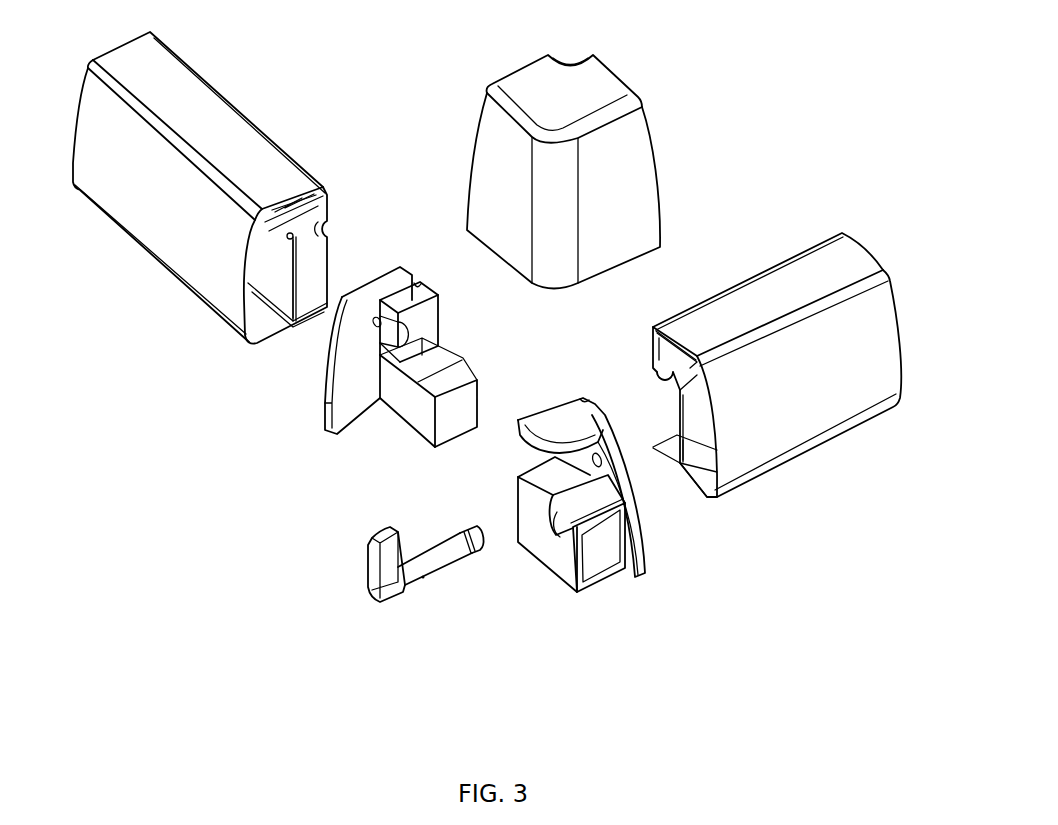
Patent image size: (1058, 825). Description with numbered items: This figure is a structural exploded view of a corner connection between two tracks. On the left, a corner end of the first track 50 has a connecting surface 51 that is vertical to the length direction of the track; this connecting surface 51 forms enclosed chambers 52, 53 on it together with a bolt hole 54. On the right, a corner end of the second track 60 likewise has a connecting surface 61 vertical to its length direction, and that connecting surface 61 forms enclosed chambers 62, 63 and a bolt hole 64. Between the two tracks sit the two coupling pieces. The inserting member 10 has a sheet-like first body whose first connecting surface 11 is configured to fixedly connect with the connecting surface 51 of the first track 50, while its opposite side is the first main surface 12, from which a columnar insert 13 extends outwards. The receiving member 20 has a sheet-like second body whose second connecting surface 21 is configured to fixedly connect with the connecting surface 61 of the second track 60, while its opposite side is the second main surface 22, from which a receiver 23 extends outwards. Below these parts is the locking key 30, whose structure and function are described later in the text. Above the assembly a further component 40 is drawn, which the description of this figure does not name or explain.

The inserting member 10 is at (455, 326).
The first connecting surface 11 is at (347, 385).
The first main surface 12 is at (352, 397).
The columnar insert 13 is at (418, 418).
The receiving member 20 is at (662, 592).
The second connecting surface 21 is at (630, 522).
The second main surface 22 is at (618, 525).
The receiver 23 is at (557, 554).
The locking key 30 is at (403, 590).
The cap 40 is at (546, 88).
The first track 50 is at (205, 283).
The connecting surface 51 is at (330, 236).
The enclosed chamber 52 is at (270, 283).
The enclosed chamber 53 is at (302, 212).
The bolt hole 54 is at (290, 236).
The second track 60 is at (797, 423).
The connecting surface 61 is at (633, 377).
The enclosed chamber 62 is at (693, 435).
The enclosed chamber 63 is at (665, 352).
The bolt hole 64 is at (672, 388).